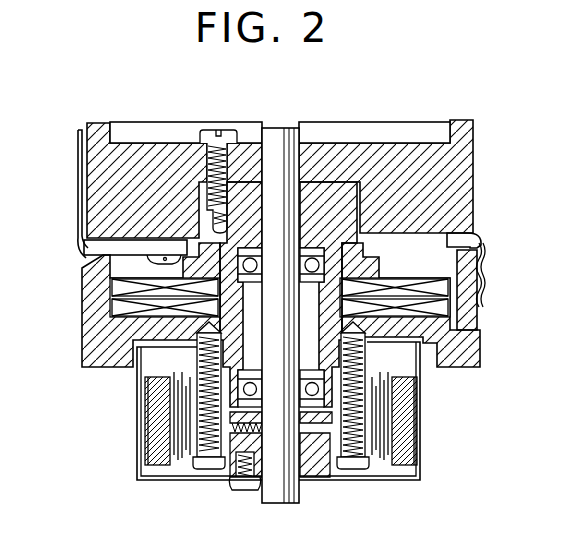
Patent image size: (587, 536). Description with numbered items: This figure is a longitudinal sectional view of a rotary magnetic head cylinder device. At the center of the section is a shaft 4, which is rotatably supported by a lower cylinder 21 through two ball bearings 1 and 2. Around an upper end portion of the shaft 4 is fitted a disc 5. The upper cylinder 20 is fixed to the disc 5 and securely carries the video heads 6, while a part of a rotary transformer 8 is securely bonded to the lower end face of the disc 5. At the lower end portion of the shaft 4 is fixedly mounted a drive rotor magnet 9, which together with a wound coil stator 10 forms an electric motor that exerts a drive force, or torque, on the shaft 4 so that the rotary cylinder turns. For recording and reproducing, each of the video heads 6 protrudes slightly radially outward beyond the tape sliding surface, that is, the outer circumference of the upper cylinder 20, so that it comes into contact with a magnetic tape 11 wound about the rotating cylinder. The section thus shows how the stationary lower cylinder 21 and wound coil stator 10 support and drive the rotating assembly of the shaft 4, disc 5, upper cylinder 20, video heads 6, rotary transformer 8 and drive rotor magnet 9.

The ball bearing 1 is at (316, 243).
The ball bearing 2 is at (370, 361).
The shaft 4 is at (279, 128).
The disc 5 is at (323, 178).
The video head 6 is at (137, 243).
The rotary transformer 8 is at (483, 256).
The drive rotor magnet 9 is at (157, 462).
The wound coil stator 10 is at (196, 462).
The magnetic tape 11 is at (77, 160).
The upper cylinder 20 is at (311, 164).
The lower cylinder 21 is at (478, 351).